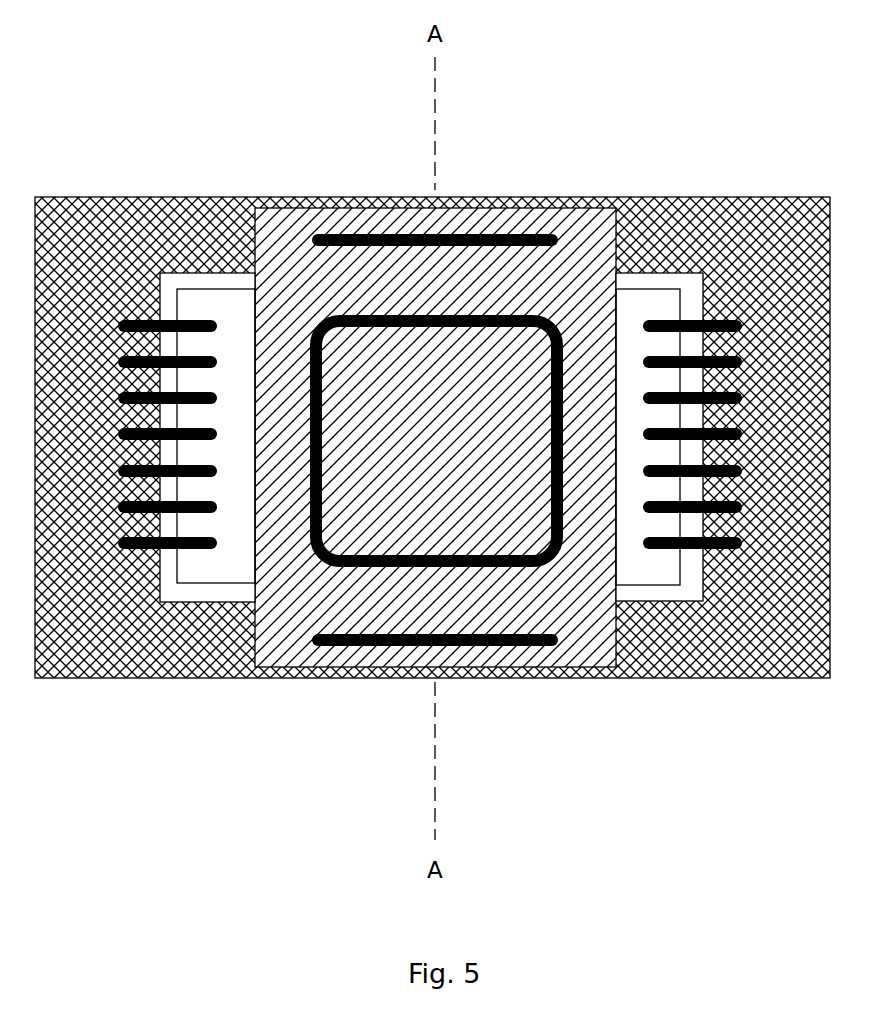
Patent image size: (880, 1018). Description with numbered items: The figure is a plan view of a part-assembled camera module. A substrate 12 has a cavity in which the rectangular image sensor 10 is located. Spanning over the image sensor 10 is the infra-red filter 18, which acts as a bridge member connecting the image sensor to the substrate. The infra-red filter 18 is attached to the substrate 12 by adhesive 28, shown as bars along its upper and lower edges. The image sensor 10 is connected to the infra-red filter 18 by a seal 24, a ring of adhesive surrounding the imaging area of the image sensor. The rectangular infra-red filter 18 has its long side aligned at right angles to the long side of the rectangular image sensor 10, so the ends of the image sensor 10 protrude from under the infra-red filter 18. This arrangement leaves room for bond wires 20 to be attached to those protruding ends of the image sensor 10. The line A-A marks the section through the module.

The image sensor 10 is at (237, 581).
The substrate 12 is at (115, 258).
The infra-red filter 18 is at (310, 295).
The bond wires 20 is at (208, 549).
The seal 24 is at (545, 563).
The adhesive 28 is at (410, 237).